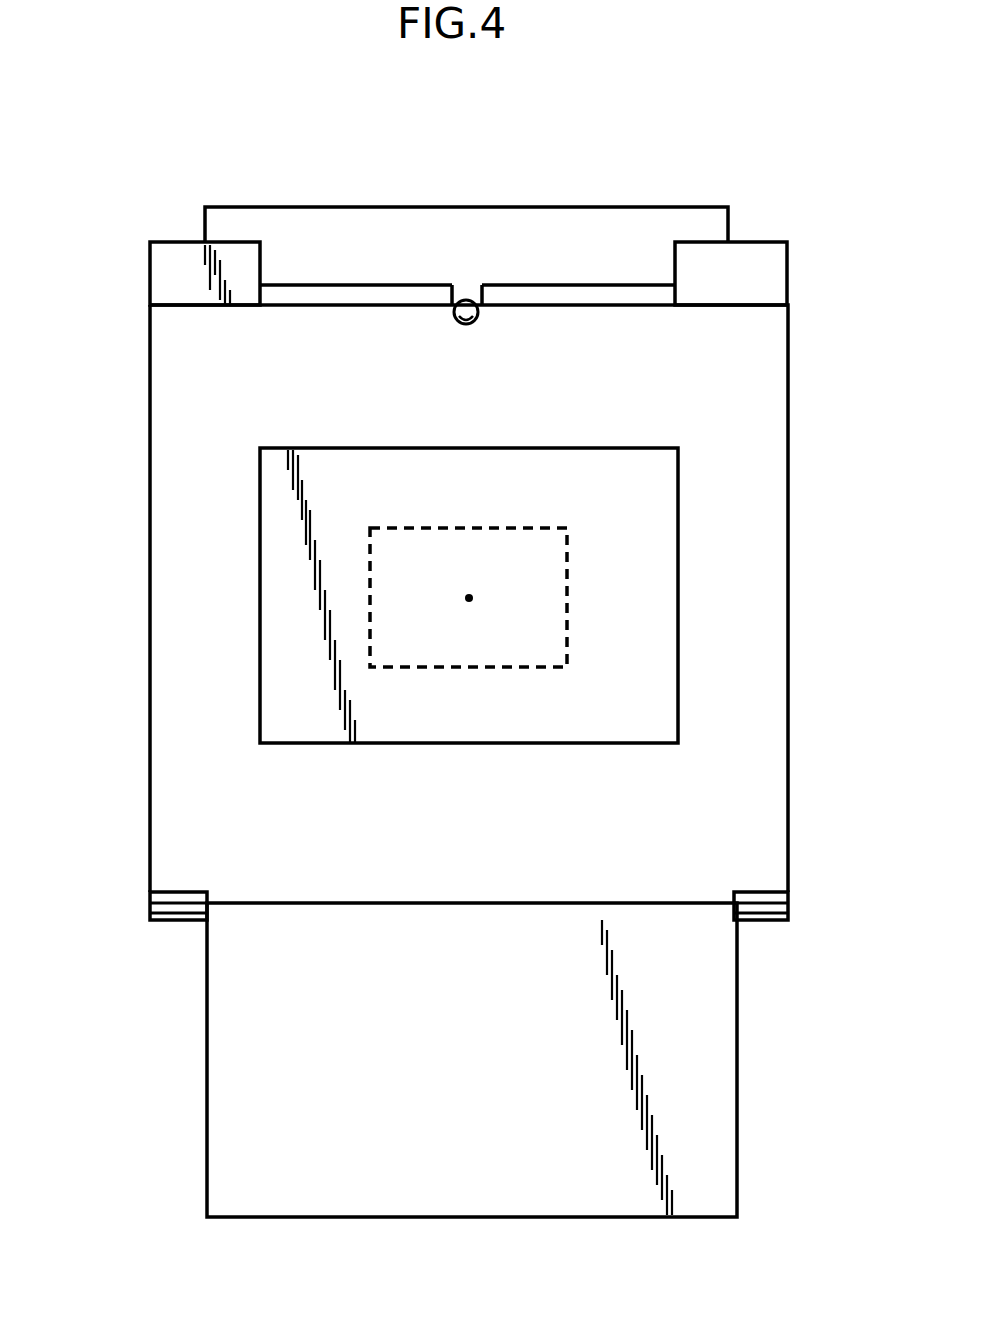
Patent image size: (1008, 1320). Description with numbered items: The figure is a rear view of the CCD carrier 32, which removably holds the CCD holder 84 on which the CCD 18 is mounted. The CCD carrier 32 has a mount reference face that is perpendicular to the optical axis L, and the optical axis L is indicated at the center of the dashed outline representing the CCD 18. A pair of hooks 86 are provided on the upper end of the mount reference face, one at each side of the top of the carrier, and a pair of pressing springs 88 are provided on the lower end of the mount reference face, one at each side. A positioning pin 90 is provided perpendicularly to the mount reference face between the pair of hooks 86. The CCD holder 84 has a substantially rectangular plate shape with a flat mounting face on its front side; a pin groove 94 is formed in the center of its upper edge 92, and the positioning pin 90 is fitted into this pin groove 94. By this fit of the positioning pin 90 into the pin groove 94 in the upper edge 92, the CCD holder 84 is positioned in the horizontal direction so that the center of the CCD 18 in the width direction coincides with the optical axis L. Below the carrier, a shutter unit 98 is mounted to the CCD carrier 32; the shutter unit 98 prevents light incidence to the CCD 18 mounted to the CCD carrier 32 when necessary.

The CCD carrier 32 is at (792, 214).
The CCD holder 84 is at (768, 745).
The hooks 86 is at (150, 270).
The upper edge 92 is at (360, 300).
The positioning pin 90 is at (473, 300).
The pin groove 94 is at (477, 325).
The pressing springs 88 is at (152, 900).
The shutter unit 98 is at (728, 1075).
The CCD 18 is at (543, 606).
The optical axis L is at (465, 598).